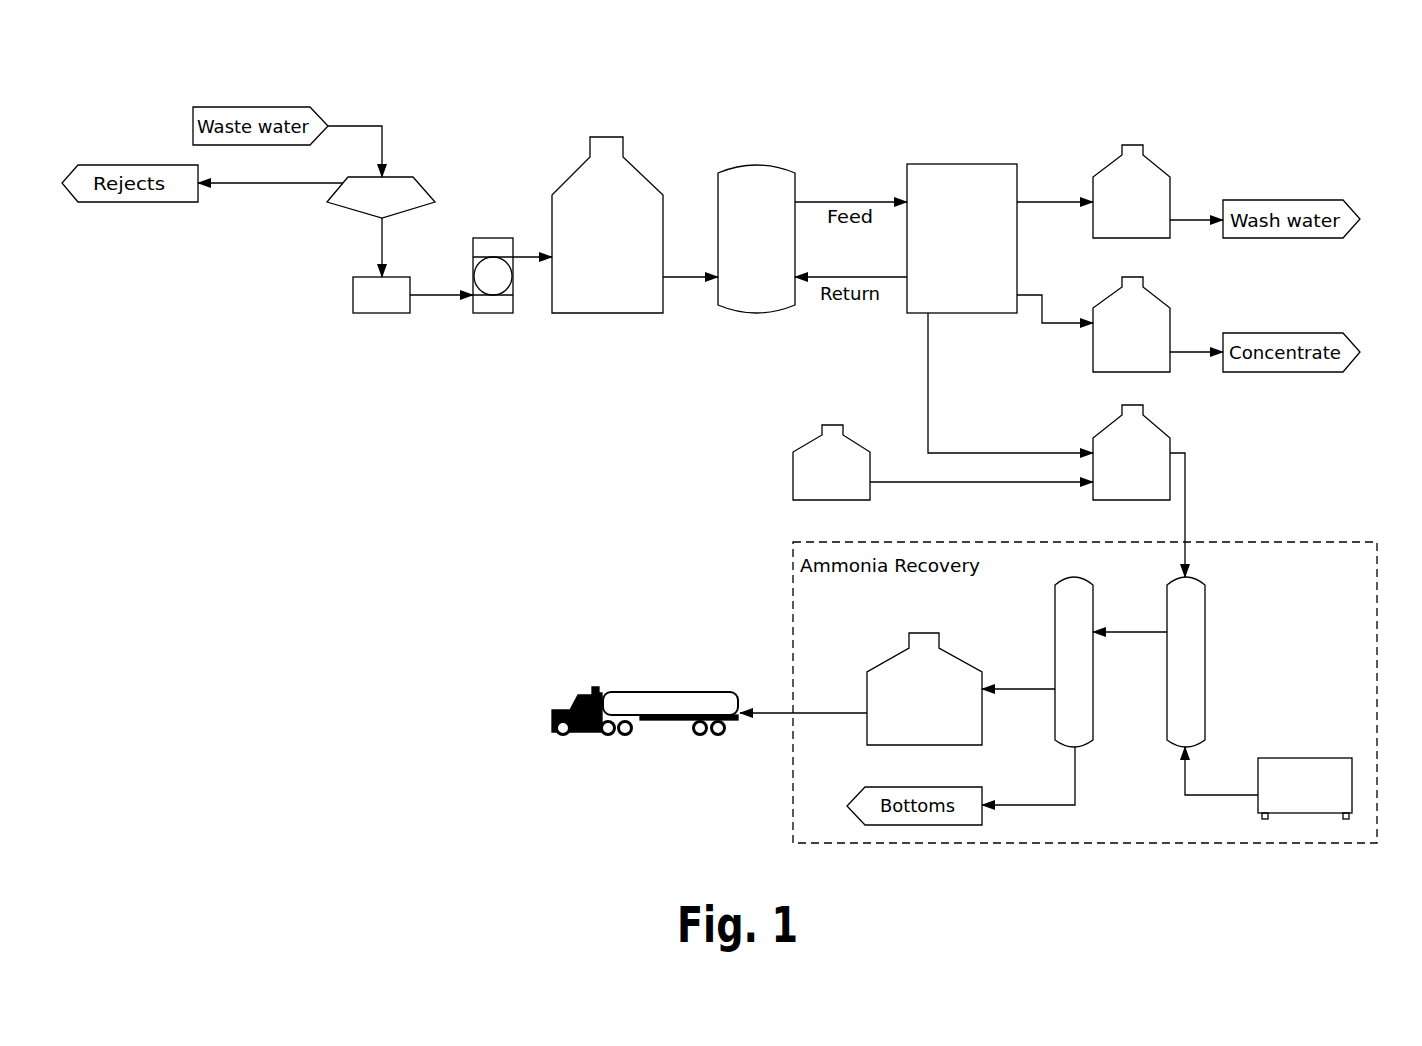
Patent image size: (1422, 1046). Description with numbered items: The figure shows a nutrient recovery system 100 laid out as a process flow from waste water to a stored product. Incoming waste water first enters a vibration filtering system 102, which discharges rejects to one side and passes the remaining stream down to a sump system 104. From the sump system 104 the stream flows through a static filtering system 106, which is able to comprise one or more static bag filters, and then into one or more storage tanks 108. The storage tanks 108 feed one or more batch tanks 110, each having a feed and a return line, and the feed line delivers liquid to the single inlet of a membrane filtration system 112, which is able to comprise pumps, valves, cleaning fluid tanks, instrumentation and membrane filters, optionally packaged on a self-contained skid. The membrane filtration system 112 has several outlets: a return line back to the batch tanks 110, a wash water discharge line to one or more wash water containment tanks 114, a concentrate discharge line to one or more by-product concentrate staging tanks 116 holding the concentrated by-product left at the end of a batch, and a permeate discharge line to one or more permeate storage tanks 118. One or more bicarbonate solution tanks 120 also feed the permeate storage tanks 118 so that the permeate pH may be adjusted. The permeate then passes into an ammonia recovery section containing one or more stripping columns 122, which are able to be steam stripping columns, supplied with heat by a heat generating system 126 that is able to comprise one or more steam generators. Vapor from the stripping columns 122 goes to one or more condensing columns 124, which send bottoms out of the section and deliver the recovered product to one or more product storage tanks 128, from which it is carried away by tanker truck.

The nutrient recovery system 100 is at (1318, 67).
The vibration filtering system 102 is at (427, 190).
The sump system 104 is at (382, 313).
The static filtering system 106 is at (493, 313).
The storage tank 108 is at (628, 137).
The batch tank 110 is at (758, 165).
The membrane filtration system 112 is at (962, 164).
The wash water containment tank 114 is at (1135, 145).
The by-product concentrate staging tank 116 is at (1157, 300).
The permeate storage tank 118 is at (1155, 428).
The bicarbonate solution tank 120 is at (808, 445).
The stripping column 122 is at (1205, 693).
The condensing column 124 is at (1093, 686).
The heat generating system 126 is at (1307, 758).
The product storage tank 128 is at (953, 655).